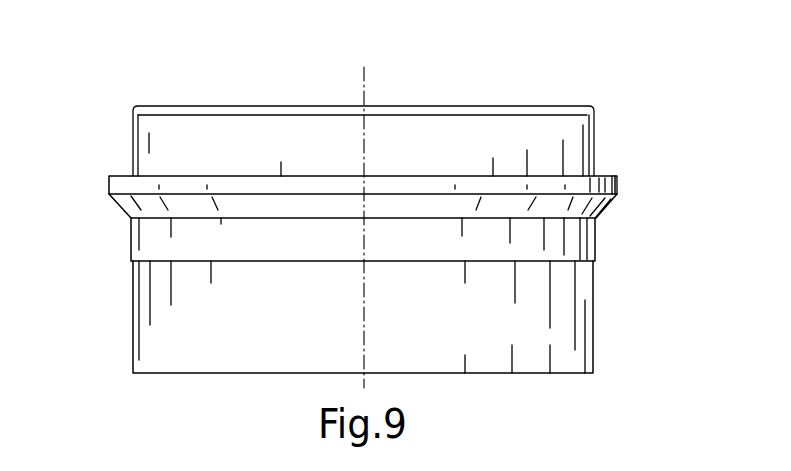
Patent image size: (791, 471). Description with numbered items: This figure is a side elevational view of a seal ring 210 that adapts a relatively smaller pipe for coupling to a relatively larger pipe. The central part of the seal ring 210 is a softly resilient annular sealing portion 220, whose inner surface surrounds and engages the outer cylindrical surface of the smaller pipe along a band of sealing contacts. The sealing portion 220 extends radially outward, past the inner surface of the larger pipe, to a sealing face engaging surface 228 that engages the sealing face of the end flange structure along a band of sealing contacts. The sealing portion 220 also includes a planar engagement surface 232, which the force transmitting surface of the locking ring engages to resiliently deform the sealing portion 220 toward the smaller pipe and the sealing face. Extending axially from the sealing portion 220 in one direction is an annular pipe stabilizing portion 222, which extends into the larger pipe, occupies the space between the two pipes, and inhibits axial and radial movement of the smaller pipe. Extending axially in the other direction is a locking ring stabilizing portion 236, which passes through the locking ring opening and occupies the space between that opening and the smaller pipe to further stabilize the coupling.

The seal ring 210 is at (428, 91).
The locking ring stabilizing portion 236 is at (165, 140).
The annular sealing portion 220 is at (130, 183).
The planar engagement surface 232 is at (602, 175).
The sealing face engaging surface 228 is at (595, 203).
The annular pipe stabilizing portion 222 is at (160, 295).